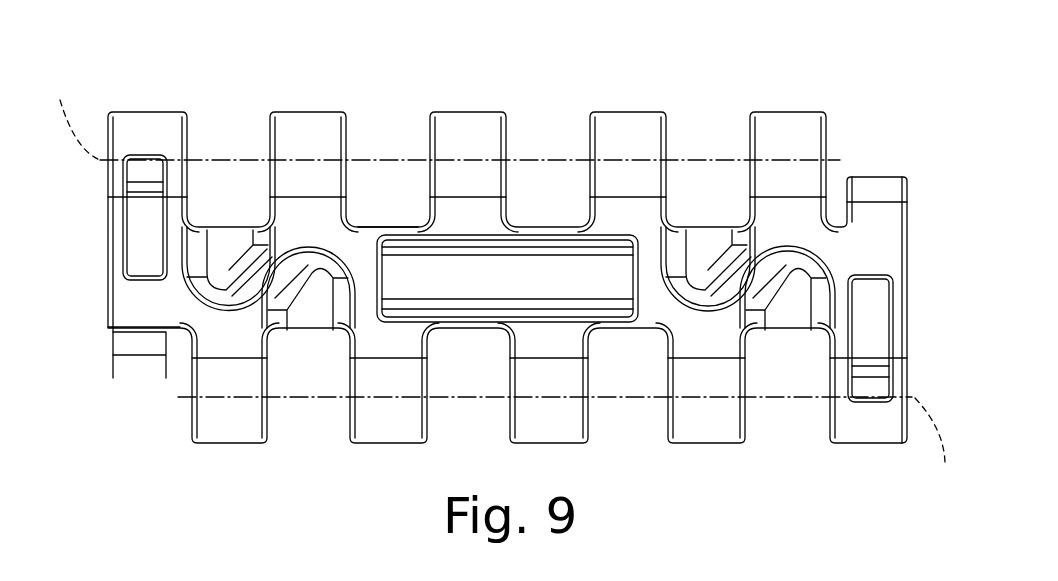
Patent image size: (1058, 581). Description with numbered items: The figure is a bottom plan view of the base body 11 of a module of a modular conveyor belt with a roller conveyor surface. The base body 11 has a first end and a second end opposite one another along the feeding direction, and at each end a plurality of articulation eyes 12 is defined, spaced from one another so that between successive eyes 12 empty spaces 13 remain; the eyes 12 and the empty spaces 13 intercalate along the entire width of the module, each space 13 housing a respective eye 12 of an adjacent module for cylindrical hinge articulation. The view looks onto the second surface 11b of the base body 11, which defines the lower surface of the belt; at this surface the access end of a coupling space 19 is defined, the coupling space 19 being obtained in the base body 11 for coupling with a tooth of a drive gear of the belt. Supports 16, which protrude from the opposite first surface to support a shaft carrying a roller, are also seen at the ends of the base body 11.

The base body 11 is at (850, 97).
The second surface 11b is at (132, 302).
The articulation eye 12 is at (299, 130).
The empty space 13 is at (383, 135).
The support 16 is at (140, 368).
The coupling space 19 is at (490, 285).